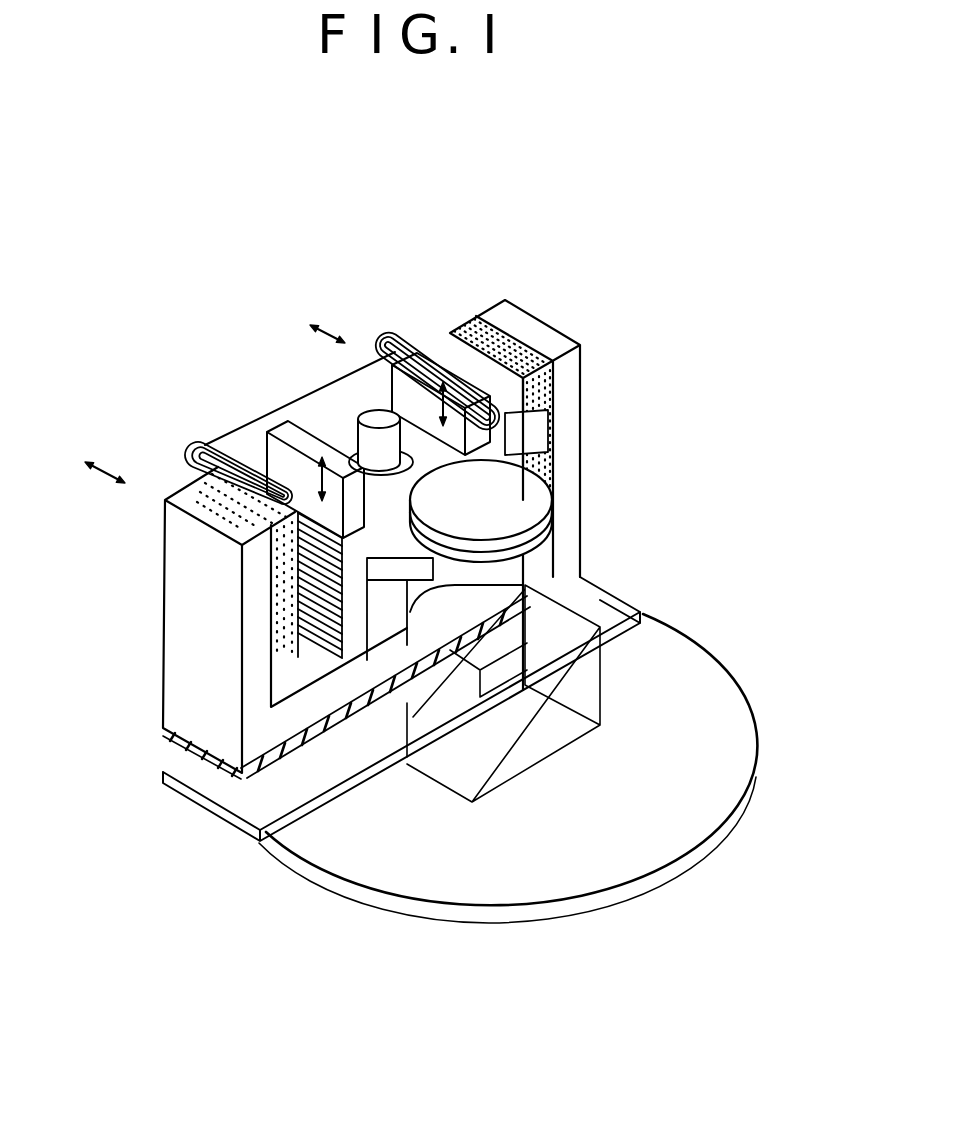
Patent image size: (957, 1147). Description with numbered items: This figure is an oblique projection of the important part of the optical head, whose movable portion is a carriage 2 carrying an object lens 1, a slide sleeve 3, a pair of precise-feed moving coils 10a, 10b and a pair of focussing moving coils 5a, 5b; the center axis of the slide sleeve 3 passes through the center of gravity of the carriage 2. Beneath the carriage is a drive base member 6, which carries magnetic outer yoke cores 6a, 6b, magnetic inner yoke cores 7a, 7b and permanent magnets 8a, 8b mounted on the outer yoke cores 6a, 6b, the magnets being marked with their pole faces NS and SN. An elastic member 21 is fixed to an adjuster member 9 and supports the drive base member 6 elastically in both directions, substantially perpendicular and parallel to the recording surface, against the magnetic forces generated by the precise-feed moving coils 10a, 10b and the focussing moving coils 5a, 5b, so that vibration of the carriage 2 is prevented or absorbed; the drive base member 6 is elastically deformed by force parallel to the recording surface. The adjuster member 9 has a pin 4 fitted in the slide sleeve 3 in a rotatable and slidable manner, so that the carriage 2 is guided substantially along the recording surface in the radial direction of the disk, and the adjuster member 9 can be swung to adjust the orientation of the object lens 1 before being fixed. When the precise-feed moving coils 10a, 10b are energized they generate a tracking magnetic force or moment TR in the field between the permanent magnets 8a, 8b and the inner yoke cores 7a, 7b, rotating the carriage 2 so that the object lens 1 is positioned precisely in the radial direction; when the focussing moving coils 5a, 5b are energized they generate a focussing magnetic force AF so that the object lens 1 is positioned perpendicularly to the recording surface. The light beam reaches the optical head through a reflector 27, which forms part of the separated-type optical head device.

The object lens 1 is at (540, 503).
The carriage 2 is at (320, 413).
The slide sleeve 3 is at (412, 470).
The pin 4 is at (372, 418).
The focussing moving coil 5a is at (507, 422).
The focussing moving coil 5b is at (290, 632).
The drive base member 6 is at (185, 733).
The magnetic outer yoke core 6a is at (572, 367).
The magnetic outer yoke core 6b is at (173, 637).
The magnetic inner yoke core 7a is at (420, 350).
The magnetic inner yoke core 7b is at (275, 432).
The permanent magnet 8a is at (502, 340).
The permanent magnet 8b is at (280, 568).
The adjuster member 9 is at (427, 866).
The precise-feed moving coil 10a is at (385, 340).
The precise-feed moving coil 10b is at (183, 455).
The elastic member 21 is at (241, 772).
The reflector 27 is at (557, 728).
The focussing magnetic force AF is at (262, 462).
The tracking magnetic force TR is at (210, 422).
The magnetic poles NS is at (548, 453).
The magnetic poles SN is at (278, 603).